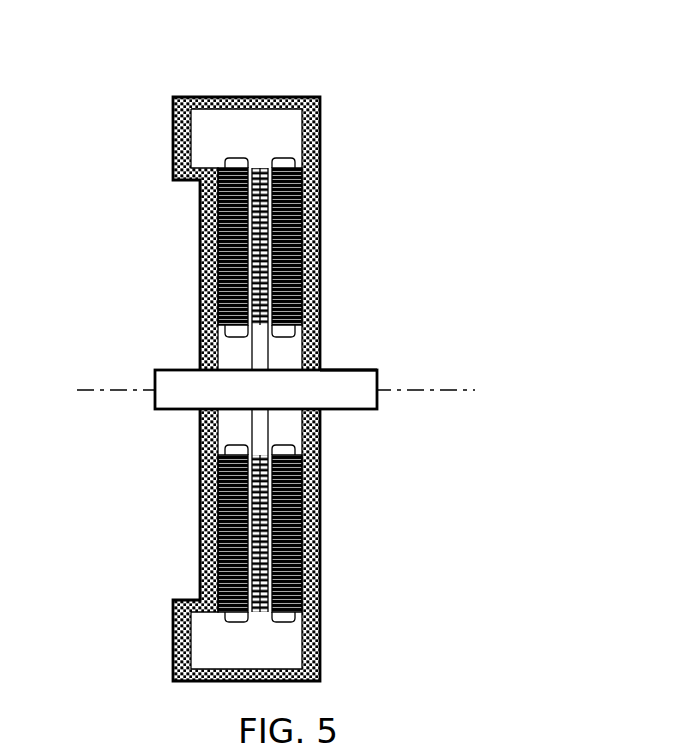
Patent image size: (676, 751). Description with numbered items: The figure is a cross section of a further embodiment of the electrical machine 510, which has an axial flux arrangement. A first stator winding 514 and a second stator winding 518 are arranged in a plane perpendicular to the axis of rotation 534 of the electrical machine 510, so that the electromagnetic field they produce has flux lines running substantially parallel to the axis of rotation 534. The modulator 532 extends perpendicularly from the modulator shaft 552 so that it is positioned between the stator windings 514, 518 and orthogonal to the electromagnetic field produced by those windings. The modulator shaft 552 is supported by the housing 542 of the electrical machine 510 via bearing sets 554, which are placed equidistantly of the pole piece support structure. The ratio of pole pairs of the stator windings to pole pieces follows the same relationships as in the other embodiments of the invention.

The electrical machine 510 is at (321, 373).
The first stator winding 514 is at (218, 289).
The second stator winding 518 is at (302, 246).
The modulator 532 is at (262, 423).
The axis of rotation 534 is at (427, 388).
The housing 542 is at (320, 580).
The modulator shaft 552 is at (355, 410).
The bearing sets 554 is at (318, 370).